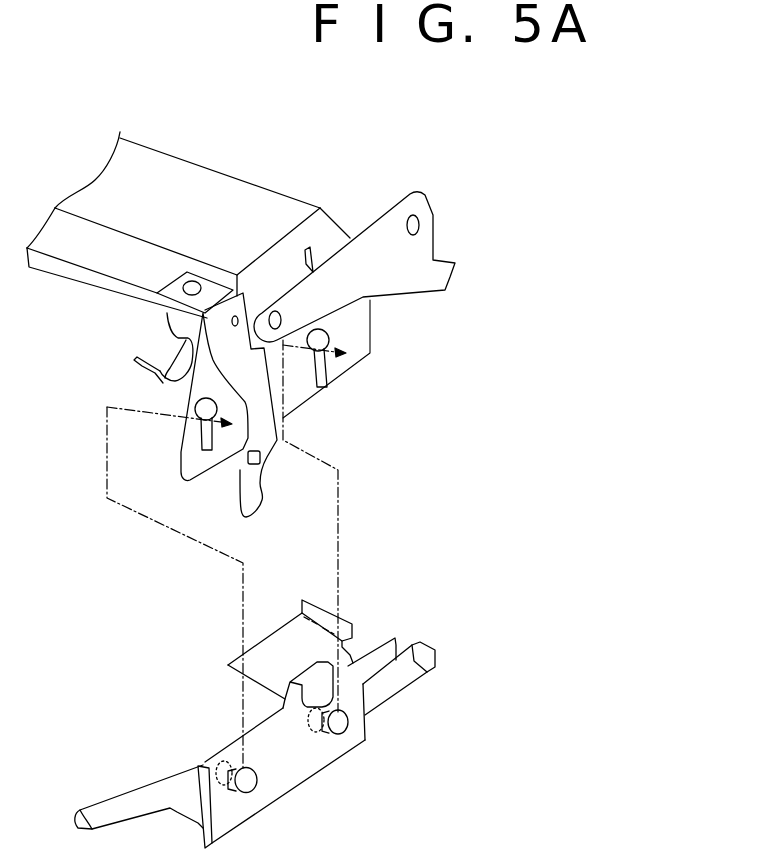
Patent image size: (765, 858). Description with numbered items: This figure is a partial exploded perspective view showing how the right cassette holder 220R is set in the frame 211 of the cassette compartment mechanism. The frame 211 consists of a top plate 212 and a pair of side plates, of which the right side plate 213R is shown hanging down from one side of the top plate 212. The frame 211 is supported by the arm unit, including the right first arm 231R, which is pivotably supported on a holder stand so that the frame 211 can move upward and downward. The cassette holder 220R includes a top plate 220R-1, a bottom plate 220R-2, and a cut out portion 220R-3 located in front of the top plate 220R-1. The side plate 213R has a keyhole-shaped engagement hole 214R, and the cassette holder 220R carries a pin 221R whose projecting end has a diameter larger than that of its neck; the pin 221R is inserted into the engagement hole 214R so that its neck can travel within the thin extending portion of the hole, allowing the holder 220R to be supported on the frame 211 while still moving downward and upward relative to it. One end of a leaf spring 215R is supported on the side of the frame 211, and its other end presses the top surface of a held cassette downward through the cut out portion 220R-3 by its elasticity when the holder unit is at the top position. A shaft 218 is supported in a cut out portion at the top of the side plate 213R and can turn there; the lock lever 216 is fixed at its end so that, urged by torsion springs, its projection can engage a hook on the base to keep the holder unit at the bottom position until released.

The frame 211 is at (251, 419).
The top plate 212 is at (265, 205).
The right first arm 231R is at (392, 237).
The shaft 218 is at (58, 268).
The leaf spring 215R is at (151, 371).
The right side plate 213R is at (357, 338).
The engagement hole 214R is at (192, 424).
The lock lever 216 is at (245, 392).
The right cassette holder 220R is at (287, 701).
The top plate 220R-1 is at (263, 650).
The cut out portion 220R-3 is at (230, 704).
The bottom plate 220R-2 is at (140, 793).
The pin 221R is at (250, 789).